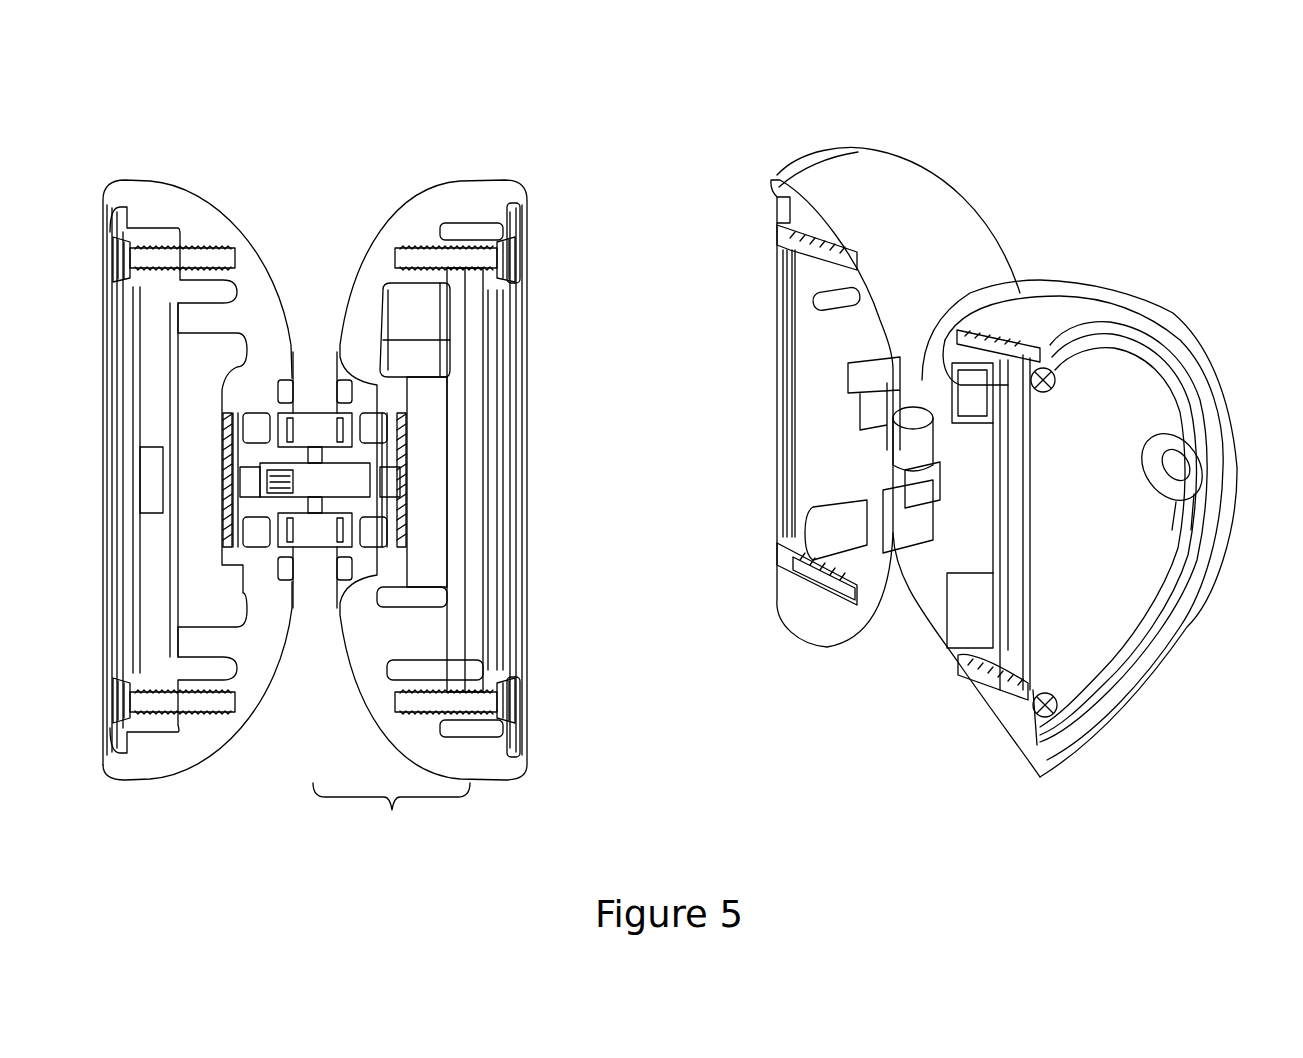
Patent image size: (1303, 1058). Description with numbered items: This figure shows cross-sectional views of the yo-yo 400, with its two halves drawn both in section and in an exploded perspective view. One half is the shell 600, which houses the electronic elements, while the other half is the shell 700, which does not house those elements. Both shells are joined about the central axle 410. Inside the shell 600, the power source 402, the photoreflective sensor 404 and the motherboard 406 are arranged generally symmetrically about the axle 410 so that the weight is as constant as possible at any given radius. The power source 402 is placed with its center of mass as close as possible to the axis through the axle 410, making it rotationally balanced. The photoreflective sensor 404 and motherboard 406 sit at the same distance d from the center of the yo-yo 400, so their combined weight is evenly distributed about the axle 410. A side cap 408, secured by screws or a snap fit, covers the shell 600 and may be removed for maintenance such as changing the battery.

The yo-yo 400 is at (730, 130).
The power source 402 is at (980, 495).
The photoreflective sensor 404 is at (1010, 447).
The motherboard 406 is at (1010, 622).
The side cap 408 is at (1070, 629).
The axle 410 is at (312, 483).
The shell 600 is at (420, 220).
The shell 700 is at (145, 197).